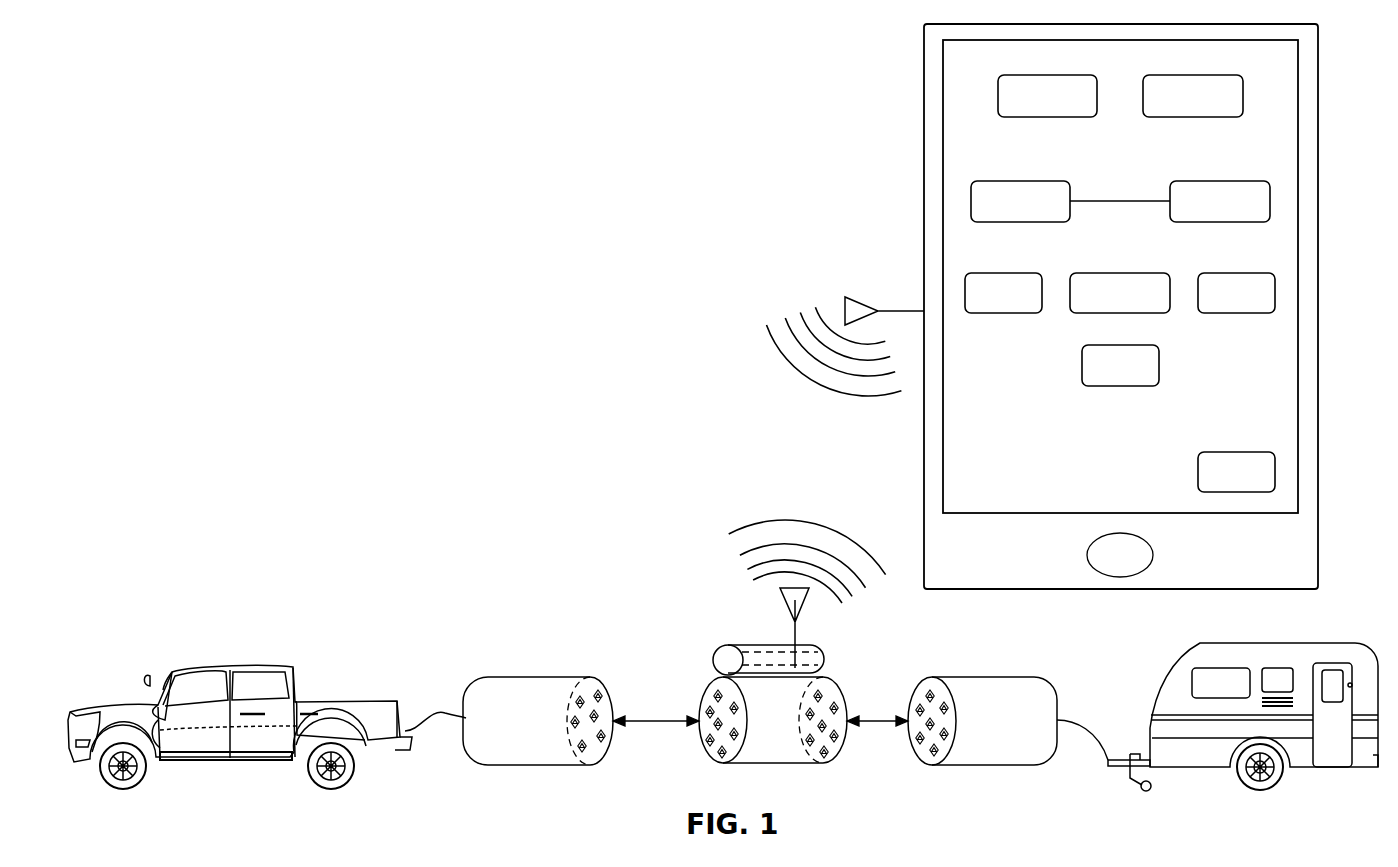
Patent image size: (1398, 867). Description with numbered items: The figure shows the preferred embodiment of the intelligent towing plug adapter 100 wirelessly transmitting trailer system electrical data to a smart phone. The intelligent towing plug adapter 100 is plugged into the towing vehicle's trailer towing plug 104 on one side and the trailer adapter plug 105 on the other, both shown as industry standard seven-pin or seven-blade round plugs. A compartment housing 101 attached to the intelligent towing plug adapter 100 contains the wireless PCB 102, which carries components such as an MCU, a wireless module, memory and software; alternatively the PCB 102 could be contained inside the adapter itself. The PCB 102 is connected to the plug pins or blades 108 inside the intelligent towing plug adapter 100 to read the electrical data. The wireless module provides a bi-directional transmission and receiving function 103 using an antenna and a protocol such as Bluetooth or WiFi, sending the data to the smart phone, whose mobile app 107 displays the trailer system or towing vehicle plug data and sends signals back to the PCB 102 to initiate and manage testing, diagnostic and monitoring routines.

The intelligent towing plug adapter 100 is at (772, 764).
The compartment housing 101 is at (727, 660).
The wireless PCB 102 is at (752, 650).
The transmission and receiving function 103 is at (772, 583).
The trailer towing plug 104 is at (538, 677).
The trailer adapter plug 105 is at (966, 677).
The mobile app 107 is at (972, 257).
The plug pins or blades 108 is at (935, 122).